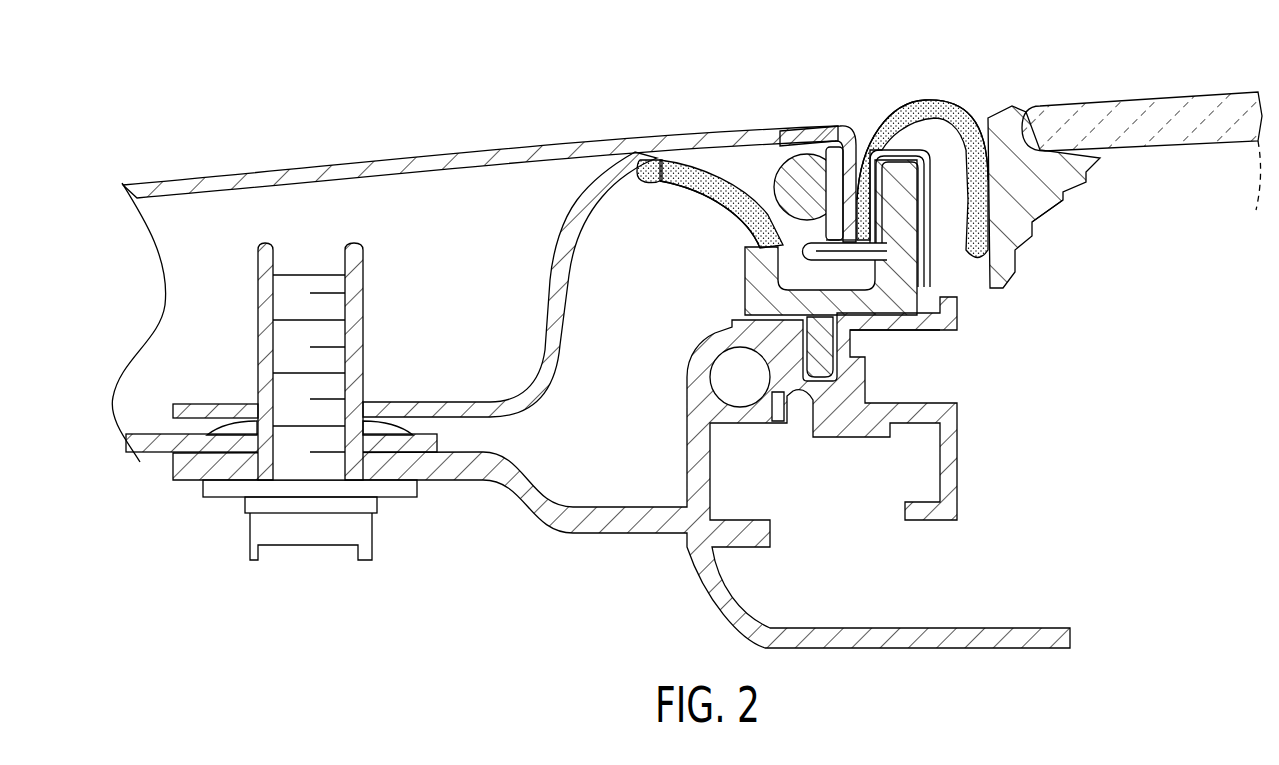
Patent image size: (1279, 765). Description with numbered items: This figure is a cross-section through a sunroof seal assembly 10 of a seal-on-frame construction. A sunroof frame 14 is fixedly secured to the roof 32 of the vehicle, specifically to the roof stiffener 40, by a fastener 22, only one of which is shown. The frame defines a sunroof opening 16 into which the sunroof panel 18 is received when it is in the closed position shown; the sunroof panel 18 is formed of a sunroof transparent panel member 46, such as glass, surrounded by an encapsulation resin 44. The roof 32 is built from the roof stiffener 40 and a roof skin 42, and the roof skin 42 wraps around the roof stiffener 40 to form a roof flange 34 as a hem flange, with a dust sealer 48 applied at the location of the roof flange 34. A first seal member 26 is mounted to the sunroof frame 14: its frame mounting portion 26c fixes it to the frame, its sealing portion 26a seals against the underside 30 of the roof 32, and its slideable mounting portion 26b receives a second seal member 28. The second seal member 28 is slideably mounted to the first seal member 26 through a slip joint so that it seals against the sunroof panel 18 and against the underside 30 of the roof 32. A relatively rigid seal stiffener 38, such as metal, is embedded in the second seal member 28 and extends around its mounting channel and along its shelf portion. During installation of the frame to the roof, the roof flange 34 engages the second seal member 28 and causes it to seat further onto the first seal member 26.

The sunroof seal assembly 10 is at (855, 115).
The sunroof frame 14 is at (870, 432).
The sunroof opening 16 is at (968, 298).
The sunroof panel 18 is at (1072, 207).
The fastener 22 is at (198, 548).
The first seal member 26 is at (744, 292).
The sealing portion 26a is at (660, 180).
The slideable mounting portion 26b is at (884, 130).
The frame mounting portion 26c is at (827, 346).
The second seal member 28 is at (932, 93).
The underside of the roof 30 is at (725, 212).
The roof 32 is at (753, 120).
The roof flange 34 is at (815, 207).
The seal stiffener 38 is at (848, 266).
The roof stiffener 40 is at (590, 185).
The roof skin 42 is at (655, 140).
The encapsulation resin 44 is at (1032, 207).
The sunroof transparent panel member 46 is at (1140, 128).
The dust sealer 48 is at (790, 152).